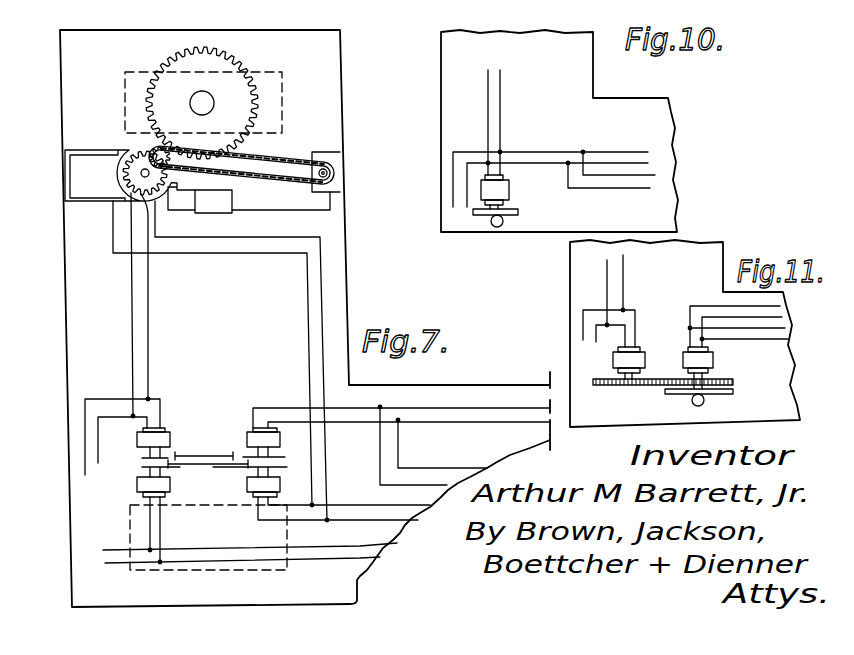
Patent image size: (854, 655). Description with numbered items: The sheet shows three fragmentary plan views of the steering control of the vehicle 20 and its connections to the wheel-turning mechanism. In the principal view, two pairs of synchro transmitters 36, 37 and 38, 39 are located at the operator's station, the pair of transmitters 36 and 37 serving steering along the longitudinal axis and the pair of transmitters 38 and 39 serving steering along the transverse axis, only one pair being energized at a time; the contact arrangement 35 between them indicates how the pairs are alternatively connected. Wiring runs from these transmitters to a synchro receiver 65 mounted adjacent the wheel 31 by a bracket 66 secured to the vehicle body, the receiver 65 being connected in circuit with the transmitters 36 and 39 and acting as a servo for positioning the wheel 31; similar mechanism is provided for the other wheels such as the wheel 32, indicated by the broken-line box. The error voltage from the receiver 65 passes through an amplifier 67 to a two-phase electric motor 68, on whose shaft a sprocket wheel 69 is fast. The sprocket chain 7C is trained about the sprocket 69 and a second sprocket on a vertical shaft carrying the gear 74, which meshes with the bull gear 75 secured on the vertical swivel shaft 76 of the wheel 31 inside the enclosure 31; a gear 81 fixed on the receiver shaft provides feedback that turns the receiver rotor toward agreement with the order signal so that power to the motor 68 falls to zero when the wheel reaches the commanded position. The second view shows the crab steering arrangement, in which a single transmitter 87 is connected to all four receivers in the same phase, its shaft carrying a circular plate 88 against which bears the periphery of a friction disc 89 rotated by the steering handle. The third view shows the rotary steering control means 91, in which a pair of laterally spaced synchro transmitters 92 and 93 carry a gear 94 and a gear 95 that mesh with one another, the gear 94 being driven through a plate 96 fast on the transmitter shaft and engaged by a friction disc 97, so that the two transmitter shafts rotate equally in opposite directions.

In FIG. 7, the control apparatus housing 20 is at (60, 370).
In FIG. 10, the control apparatus housing 20 is at (436, 123).
In FIG. 11, the control apparatus housing 20 is at (565, 297).
In FIG. 7, the wheel 31 is at (265, 92).
In FIG. 7, the wheel 32 is at (140, 524).
In FIG. 7, the switch contact assembly 35 is at (208, 443).
In FIG. 7, the synchro transmitter 36 is at (280, 485).
In FIG. 7, the synchro transmitter 37 is at (137, 485).
In FIG. 7, the synchro transmitter 38 is at (280, 440).
In FIG. 7, the synchro transmitter 39 is at (137, 438).
In FIG. 7, the synchro receiver 65 is at (118, 173).
In FIG. 7, the bracket 66 is at (93, 205).
In FIG. 7, the amplifier 67 is at (210, 211).
In FIG. 7, the two-phase electric motor 68 is at (325, 156).
In FIG. 7, the sprocket wheel 69 is at (296, 162).
In FIG. 7, the drive chain 7C is at (253, 158).
In FIG. 7, the gear 74 is at (163, 147).
In FIG. 7, the bull gear 75 is at (210, 67).
In FIG. 7, the vertical swivel shaft 76 is at (214, 103).
In FIG. 7, the gear 81 is at (136, 168).
In FIG. 10, the transmitter 87 is at (503, 194).
In FIG. 10, the circular plate 88 is at (512, 218).
In FIG. 10, the friction disc 89 is at (493, 228).
In FIG. 11, the steering control means 91 is at (658, 338).
In FIG. 11, the synchro transmitter 92 is at (713, 362).
In FIG. 11, the synchro transmitter 93 is at (613, 360).
In FIG. 11, the gear 94 is at (733, 382).
In FIG. 11, the gear 95 is at (630, 386).
In FIG. 11, the plate 96 is at (668, 394).
In FIG. 11, the friction disc 97 is at (705, 401).